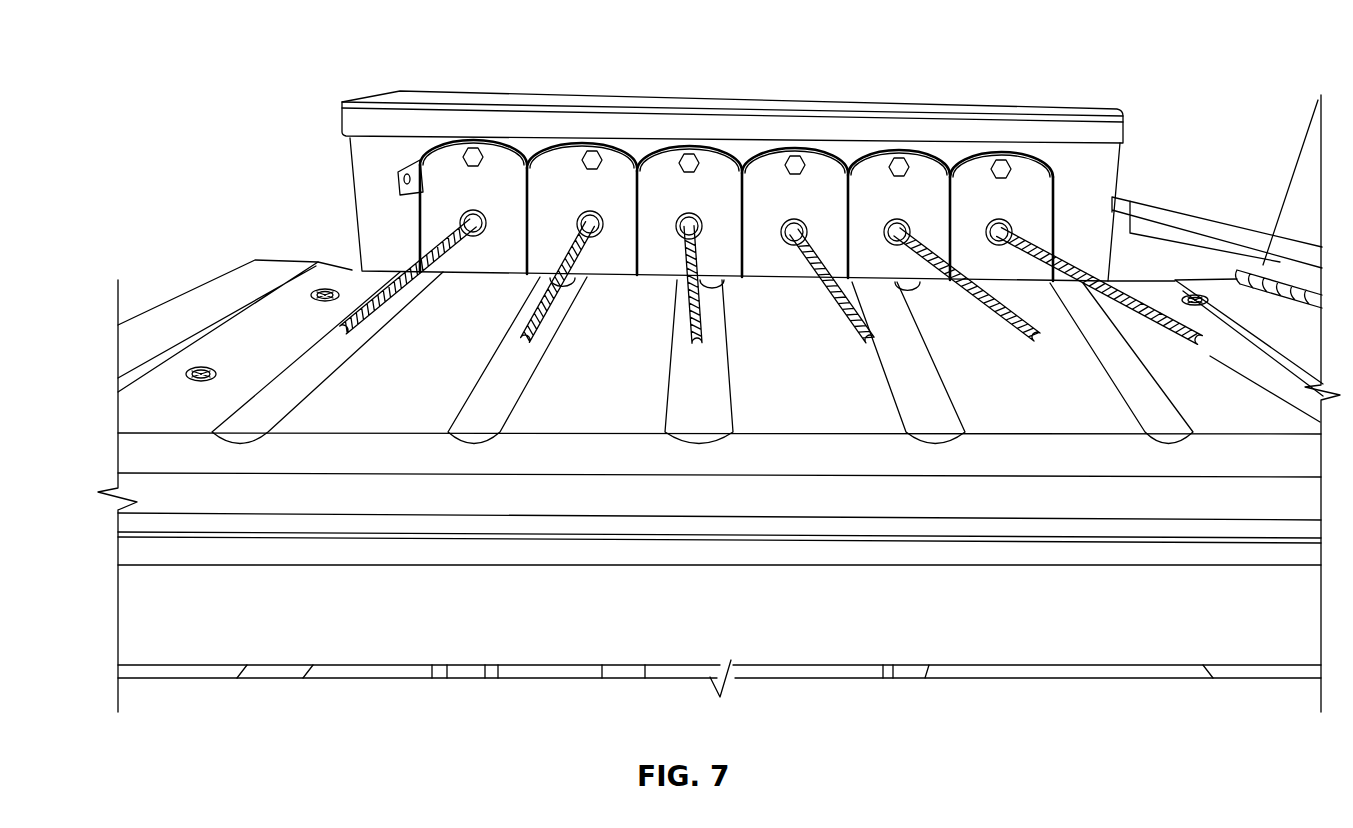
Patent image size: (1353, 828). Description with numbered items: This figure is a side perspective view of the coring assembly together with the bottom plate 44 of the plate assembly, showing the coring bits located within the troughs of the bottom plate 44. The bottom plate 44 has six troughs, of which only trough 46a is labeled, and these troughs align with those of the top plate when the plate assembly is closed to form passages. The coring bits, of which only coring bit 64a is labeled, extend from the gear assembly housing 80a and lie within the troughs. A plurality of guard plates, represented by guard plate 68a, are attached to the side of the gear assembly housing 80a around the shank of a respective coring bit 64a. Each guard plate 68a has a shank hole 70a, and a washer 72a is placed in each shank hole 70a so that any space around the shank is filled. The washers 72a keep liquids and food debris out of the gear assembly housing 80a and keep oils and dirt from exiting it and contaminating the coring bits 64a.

The bottom plate 44 is at (860, 461).
The trough 46a is at (305, 380).
The coring bit 64a is at (1147, 298).
The guard plate 68a is at (985, 192).
The shank hole 70a is at (1008, 223).
The washer 72a is at (1013, 232).
The gear assembly housing 80a is at (618, 102).